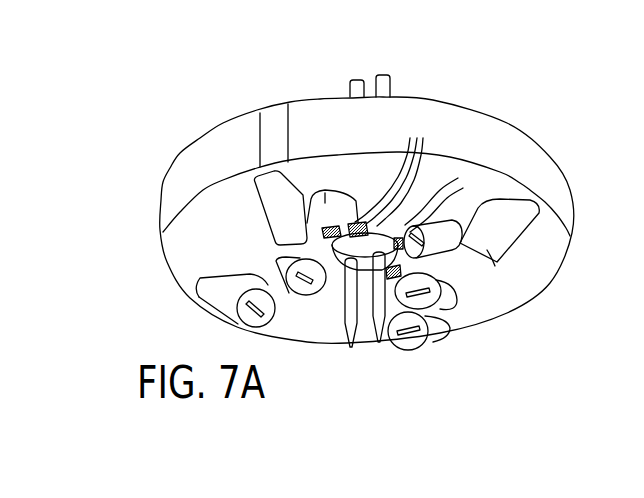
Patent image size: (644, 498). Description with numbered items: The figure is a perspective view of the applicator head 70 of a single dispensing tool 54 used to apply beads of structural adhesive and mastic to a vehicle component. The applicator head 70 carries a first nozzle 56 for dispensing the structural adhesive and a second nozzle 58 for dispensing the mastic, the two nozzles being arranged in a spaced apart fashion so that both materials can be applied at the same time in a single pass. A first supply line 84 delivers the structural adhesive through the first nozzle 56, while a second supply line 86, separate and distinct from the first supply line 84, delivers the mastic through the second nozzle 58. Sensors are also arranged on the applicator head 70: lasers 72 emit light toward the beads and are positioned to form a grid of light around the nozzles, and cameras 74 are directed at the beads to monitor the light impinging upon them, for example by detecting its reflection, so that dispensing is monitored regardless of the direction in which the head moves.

The dispensing tool 54 is at (172, 123).
The first nozzle 56 is at (382, 347).
The second nozzle 58 is at (350, 345).
The applicator head 70 is at (553, 170).
The lasers 72 is at (424, 171).
The cameras 74 is at (322, 190).
The first supply line 84 is at (389, 77).
The second supply line 86 is at (348, 80).